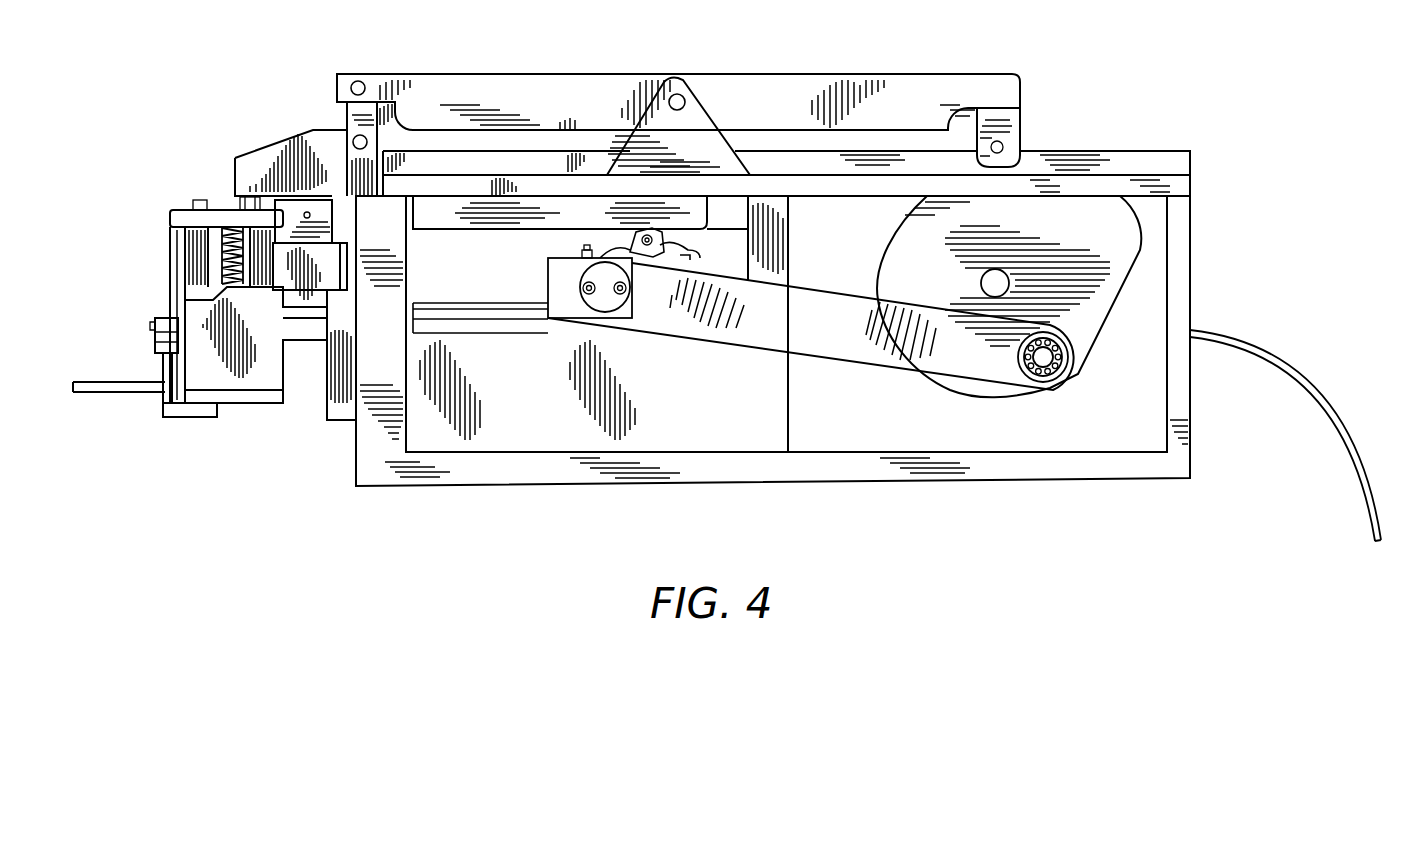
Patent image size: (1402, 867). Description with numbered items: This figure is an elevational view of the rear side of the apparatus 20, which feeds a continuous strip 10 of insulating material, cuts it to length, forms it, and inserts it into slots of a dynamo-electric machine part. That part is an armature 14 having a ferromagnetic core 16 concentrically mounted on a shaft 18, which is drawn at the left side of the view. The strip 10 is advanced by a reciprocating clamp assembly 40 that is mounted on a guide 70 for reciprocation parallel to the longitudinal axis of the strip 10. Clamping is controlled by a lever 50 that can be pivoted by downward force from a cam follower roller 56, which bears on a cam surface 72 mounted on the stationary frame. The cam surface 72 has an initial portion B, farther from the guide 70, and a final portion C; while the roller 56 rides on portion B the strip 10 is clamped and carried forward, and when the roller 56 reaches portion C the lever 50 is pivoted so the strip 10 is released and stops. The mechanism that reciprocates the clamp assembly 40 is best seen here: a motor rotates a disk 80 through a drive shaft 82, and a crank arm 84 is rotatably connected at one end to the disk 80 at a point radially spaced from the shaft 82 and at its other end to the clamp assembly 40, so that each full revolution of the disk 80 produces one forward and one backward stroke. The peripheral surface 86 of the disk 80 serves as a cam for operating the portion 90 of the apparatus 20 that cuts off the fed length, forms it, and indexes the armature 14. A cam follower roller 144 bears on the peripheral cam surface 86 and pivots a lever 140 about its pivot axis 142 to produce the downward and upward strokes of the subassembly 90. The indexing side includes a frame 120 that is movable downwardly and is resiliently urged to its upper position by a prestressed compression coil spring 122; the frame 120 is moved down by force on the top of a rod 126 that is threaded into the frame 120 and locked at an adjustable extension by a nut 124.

The strip 10 is at (1335, 405).
The armature 14 is at (146, 365).
The ferromagnetic core 16 is at (173, 417).
The shaft 18 is at (140, 388).
The apparatus 20 is at (224, 75).
The reciprocating clamp assembly 40 is at (562, 318).
The lever 50 is at (633, 238).
The cam follower roller 56 is at (667, 243).
The guide 70 is at (478, 332).
The cam surface 72 is at (452, 232).
The disk 80 is at (897, 250).
The drive shaft 82 is at (1005, 272).
The crank arm 84 is at (847, 340).
The peripheral cam surface 86 is at (1108, 325).
The subassembly 90 is at (283, 126).
The frame 120 is at (202, 207).
The compression coil spring 122 is at (217, 297).
The nut 124 is at (207, 210).
The rod 126 is at (247, 198).
The lever 140 is at (853, 86).
The pivot axis 142 is at (683, 98).
The cam follower roller 144 is at (1022, 156).
The initial portion of cam surface B is at (700, 233).
The final portion of cam surface C is at (505, 233).